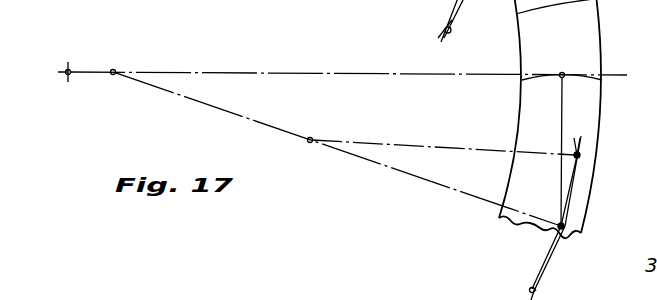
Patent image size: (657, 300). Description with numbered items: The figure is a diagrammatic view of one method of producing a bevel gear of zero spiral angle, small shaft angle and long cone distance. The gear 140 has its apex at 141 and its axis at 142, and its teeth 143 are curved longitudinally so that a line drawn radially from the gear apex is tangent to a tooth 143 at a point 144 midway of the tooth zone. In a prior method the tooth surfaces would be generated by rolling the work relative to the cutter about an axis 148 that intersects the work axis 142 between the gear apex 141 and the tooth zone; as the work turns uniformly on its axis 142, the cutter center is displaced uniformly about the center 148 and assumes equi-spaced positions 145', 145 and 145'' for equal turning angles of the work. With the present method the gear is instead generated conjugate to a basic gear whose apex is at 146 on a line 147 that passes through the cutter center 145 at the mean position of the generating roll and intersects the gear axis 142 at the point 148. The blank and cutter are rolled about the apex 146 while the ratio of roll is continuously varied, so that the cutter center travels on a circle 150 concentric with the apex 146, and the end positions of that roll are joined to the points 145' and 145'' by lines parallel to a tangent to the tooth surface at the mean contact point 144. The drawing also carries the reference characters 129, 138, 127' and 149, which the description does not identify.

The gear apex 141 is at (65, 77).
The axis of roll 148 is at (115, 70).
The gear axis 142 is at (312, 71).
The line through cutter center 147 is at (247, 119).
The apex of basic gear 146 is at (313, 139).
The lever arm 129 is at (458, 13).
The tick mark 138 is at (444, 27).
The pivot 127' is at (462, 45).
The gear of zero spiral angle 140 is at (598, 58).
The mean contact point 144 is at (563, 73).
The teeth 143 is at (541, 78).
The cutter center position 145'' is at (608, 144).
The cutter center 145 is at (592, 223).
The line 149 is at (549, 267).
The circle 150 is at (541, 270).
The cutter center position 145' is at (561, 289).